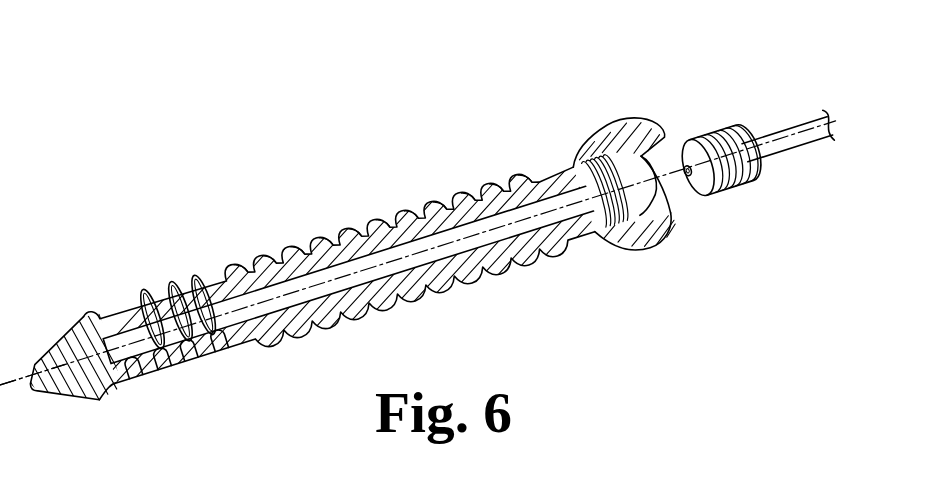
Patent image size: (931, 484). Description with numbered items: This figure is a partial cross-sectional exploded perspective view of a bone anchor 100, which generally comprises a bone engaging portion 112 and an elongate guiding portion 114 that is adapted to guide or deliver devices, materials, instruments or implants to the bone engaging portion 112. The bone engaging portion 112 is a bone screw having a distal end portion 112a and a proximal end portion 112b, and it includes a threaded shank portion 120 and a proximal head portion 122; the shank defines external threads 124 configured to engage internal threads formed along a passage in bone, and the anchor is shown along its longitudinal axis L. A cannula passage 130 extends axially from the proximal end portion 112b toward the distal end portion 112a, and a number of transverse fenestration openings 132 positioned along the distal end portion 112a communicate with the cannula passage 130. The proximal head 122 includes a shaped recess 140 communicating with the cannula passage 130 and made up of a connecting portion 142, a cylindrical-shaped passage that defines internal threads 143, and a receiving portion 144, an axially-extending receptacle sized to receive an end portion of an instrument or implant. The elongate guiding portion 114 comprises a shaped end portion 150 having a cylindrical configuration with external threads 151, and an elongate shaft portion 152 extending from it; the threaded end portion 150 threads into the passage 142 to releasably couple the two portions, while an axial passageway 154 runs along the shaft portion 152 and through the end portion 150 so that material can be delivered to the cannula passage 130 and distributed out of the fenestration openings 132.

The bone anchor 100 is at (456, 60).
The longitudinal axis L is at (8, 382).
The bone engaging portion 112 is at (387, 242).
The distal end portion 112a is at (135, 400).
The proximal end portion 112b is at (627, 262).
The elongate guiding portion 114 is at (749, 123).
The threaded shank portion 120 is at (396, 210).
The proximal head portion 122 is at (626, 187).
The external threads 124 is at (283, 262).
The cannula passage 130 is at (347, 278).
The transverse fenestration openings 132 is at (192, 288).
The shaped recess 140 is at (668, 183).
The connecting portion 142 is at (598, 228).
The internal threads 143 is at (609, 238).
The receiving portion 144 is at (630, 222).
The shaped end portion 150 is at (730, 129).
The external threads 151 is at (757, 177).
The elongate shaft portion 152 is at (789, 126).
The axial passageway 154 is at (685, 168).